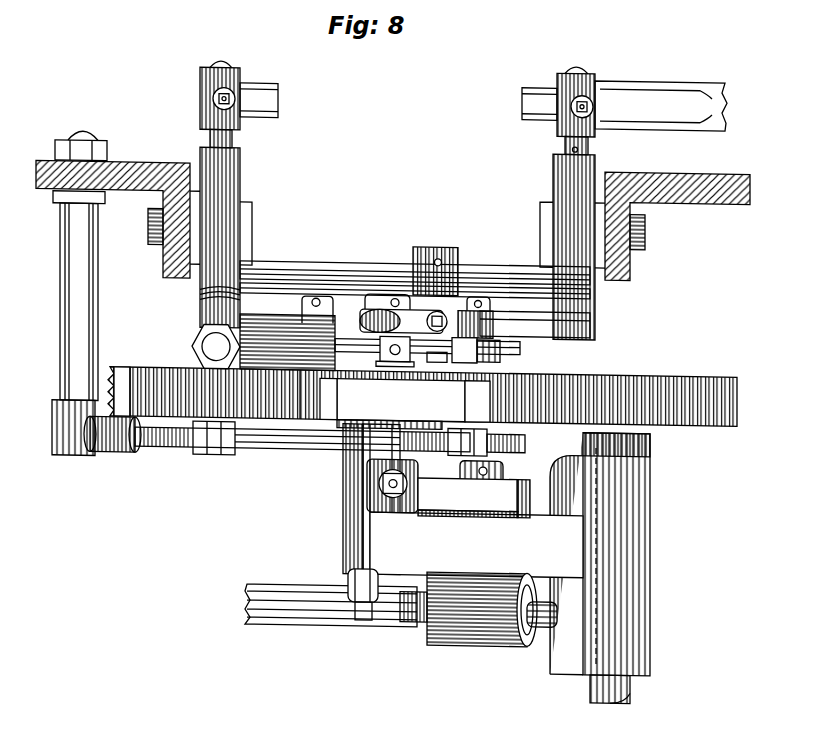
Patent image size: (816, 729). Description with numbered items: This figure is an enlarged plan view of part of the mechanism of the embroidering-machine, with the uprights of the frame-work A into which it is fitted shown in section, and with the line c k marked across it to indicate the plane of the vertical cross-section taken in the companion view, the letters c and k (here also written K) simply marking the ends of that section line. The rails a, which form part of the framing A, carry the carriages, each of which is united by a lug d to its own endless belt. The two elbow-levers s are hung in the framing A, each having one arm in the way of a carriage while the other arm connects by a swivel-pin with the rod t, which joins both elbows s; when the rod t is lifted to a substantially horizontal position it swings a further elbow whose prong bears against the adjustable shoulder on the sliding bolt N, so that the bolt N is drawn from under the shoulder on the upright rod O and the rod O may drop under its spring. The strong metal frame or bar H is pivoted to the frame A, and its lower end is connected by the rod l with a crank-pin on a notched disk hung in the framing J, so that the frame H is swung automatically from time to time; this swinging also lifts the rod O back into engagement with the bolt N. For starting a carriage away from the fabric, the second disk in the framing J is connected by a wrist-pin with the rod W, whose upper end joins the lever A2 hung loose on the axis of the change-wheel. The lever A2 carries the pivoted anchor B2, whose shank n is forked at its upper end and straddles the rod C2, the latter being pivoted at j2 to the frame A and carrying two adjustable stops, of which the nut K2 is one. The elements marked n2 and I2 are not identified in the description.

The frame-work A is at (393, 211).
The rails a is at (661, 106).
The elbow-lever s is at (397, 200).
The section line c is at (437, 247).
The upright rod O is at (263, 341).
The sliding bolt N is at (427, 350).
The lug d is at (403, 313).
The rod t is at (483, 331).
The rod l is at (127, 391).
The framing J is at (215, 393).
The stop n2 is at (405, 400).
The anchor B2 is at (401, 404).
The section line k is at (422, 401).
The pivot j2 is at (79, 306).
The adjustable stop K2 is at (214, 451).
The rod C2 is at (277, 446).
The shank n is at (465, 467).
The nut I2 is at (486, 431).
The lever A2 is at (448, 488).
The frame or bar H is at (496, 564).
The rod W is at (331, 605).
The section line K is at (385, 612).